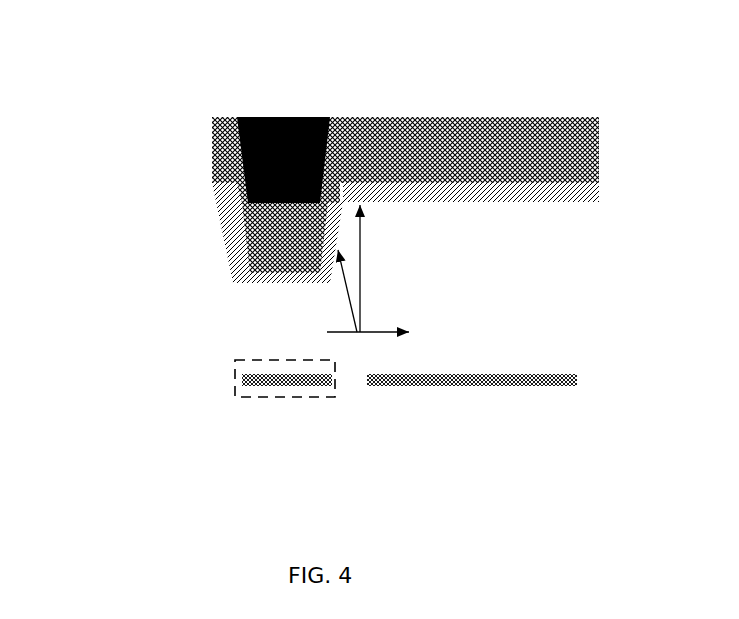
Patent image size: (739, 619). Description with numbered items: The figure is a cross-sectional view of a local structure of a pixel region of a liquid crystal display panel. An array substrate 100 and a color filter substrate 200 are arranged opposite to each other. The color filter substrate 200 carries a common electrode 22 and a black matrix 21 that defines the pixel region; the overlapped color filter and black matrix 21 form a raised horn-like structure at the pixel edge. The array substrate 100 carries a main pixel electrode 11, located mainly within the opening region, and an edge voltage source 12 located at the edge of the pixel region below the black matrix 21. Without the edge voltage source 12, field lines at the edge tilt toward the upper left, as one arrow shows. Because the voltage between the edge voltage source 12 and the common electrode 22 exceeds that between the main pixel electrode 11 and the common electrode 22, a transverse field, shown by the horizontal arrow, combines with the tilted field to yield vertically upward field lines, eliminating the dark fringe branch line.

The color filter substrate 200 is at (50, 18).
The black matrix 21 is at (236, 202).
The common electrode 22 is at (490, 185).
The array substrate 100 is at (42, 460).
The edge voltage source 12 is at (268, 375).
The main pixel electrode 11 is at (470, 378).